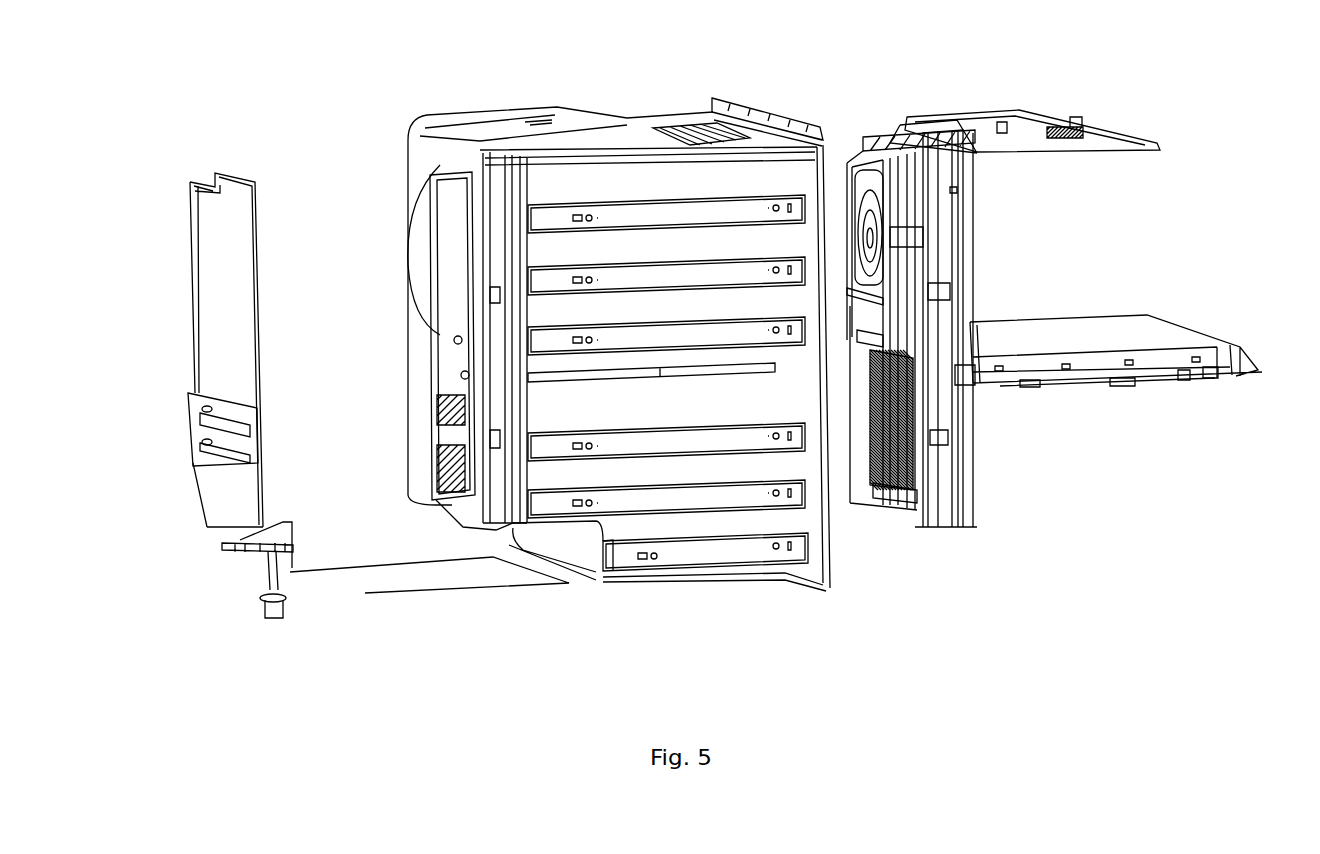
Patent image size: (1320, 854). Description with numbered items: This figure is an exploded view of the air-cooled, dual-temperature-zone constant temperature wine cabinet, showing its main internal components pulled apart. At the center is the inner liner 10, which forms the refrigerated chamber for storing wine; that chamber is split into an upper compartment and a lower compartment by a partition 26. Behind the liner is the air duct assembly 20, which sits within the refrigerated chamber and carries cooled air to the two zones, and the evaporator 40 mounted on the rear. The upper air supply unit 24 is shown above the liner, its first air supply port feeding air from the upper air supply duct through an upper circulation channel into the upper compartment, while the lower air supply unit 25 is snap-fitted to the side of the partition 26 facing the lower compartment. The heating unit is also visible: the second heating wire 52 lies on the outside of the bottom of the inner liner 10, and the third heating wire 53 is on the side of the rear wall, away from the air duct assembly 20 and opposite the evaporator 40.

The inner liner 10 is at (630, 117).
The air duct assembly 20 is at (992, 110).
The upper air supply unit 24 is at (1090, 117).
The lower air supply unit 25 is at (1183, 373).
The partition 26 is at (1143, 320).
The evaporator 40 is at (890, 503).
The second heating wire 52 is at (375, 587).
The third heating wire 53 is at (195, 463).